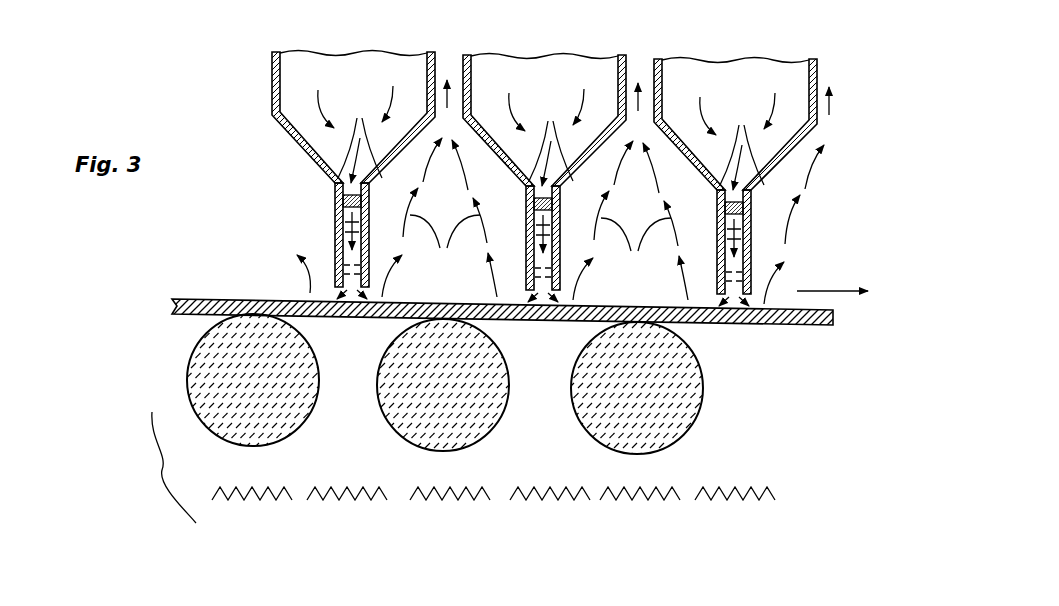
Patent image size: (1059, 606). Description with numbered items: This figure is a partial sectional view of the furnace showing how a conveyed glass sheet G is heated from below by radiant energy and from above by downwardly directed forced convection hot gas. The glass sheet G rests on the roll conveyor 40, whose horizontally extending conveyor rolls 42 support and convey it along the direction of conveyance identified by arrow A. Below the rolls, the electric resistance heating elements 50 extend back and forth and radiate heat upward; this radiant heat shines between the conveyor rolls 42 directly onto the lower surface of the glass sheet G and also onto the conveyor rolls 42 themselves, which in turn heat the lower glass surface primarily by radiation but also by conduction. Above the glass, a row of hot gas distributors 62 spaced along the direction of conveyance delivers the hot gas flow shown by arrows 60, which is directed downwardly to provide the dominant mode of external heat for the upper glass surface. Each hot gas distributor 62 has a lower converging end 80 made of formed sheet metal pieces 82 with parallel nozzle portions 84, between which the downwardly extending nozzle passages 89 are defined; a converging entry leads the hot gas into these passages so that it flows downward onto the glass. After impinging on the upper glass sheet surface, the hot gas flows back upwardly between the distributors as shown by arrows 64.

The roll conveyor 40 is at (732, 398).
The conveyor rolls 42 is at (268, 410).
The heating elements 50 is at (322, 500).
The arrows indicating downward hot gas flow 60 is at (336, 232).
The hot gas distributors 62 is at (270, 88).
The arrows indicating upward return gas flow 64 is at (448, 98).
The lower converging ends 80 is at (322, 160).
The formed sheet metal pieces 82 is at (551, 151).
The nozzle portions 84 is at (337, 258).
The nozzle passages 89 is at (352, 288).
The glass sheet G is at (218, 298).
The arrow indicating direction of conveyance A is at (813, 292).